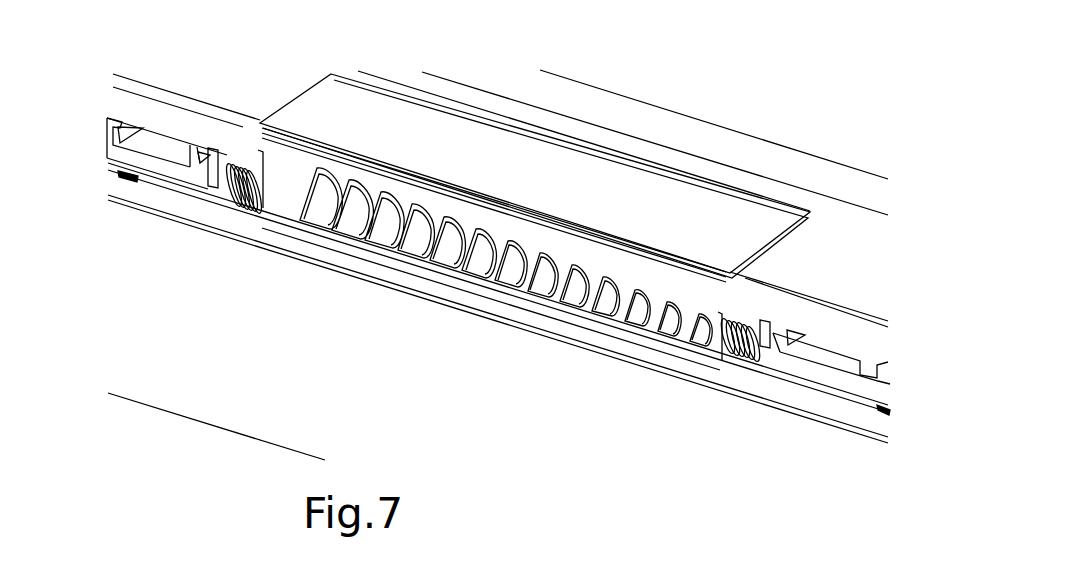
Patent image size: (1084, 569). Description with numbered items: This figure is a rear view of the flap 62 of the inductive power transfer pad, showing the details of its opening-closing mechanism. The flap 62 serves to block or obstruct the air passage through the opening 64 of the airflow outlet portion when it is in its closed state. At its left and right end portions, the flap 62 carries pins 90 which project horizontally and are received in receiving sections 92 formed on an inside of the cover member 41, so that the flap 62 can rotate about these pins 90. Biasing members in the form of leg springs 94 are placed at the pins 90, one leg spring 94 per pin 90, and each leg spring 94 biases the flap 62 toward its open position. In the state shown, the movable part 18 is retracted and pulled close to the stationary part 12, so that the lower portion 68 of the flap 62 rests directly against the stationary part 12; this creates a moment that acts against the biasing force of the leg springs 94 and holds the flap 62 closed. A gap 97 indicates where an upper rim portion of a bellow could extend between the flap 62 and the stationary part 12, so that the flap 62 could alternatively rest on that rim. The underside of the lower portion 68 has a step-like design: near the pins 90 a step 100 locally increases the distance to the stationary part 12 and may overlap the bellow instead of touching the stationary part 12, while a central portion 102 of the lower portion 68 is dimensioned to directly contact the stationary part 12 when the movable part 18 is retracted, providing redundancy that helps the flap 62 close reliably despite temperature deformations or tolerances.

The stationary part 12 is at (450, 288).
The movable part 18 is at (501, 76).
The cover member 41 is at (852, 130).
The flap 62 is at (552, 272).
The opening 64 is at (790, 240).
The lower portion 68 is at (568, 310).
The pins 90 is at (242, 207).
The receiving sections 92 is at (253, 145).
The leg springs 94 is at (230, 200).
The gap 97 is at (120, 173).
The step 100 is at (262, 207).
The central portion 102 is at (412, 284).